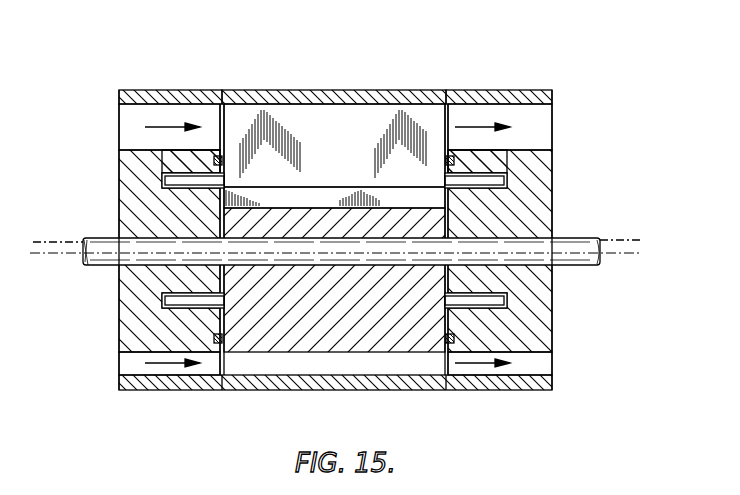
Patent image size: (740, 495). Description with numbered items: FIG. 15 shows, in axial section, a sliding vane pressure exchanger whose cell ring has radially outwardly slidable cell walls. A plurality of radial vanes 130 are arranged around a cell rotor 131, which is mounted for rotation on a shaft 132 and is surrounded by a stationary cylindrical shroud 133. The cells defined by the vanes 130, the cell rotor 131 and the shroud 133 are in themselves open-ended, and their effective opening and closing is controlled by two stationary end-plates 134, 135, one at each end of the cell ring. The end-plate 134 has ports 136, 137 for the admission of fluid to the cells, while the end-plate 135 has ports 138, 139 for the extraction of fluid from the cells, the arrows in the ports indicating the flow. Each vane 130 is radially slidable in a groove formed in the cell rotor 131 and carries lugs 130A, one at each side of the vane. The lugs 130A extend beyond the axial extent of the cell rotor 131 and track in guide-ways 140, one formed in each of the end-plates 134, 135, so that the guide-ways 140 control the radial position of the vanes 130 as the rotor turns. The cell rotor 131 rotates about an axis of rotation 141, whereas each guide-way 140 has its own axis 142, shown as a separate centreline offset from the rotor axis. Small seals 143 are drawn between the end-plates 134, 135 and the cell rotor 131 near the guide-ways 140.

The radial vane 130 is at (355, 135).
The lug 130A is at (163, 180).
The cell rotor 131 is at (280, 348).
The shaft 132 is at (101, 263).
The stationary cylindrical shroud 133 is at (278, 96).
The stationary end-plate 134 is at (147, 95).
The stationary end-plate 135 is at (535, 93).
The port 136 is at (186, 112).
The port 137 is at (210, 368).
The port 138 is at (486, 110).
The port 139 is at (538, 367).
The guide-way 140 is at (160, 173).
The axis of rotation 141 is at (51, 255).
The axis 142 is at (45, 241).
The seal 143 is at (446, 160).